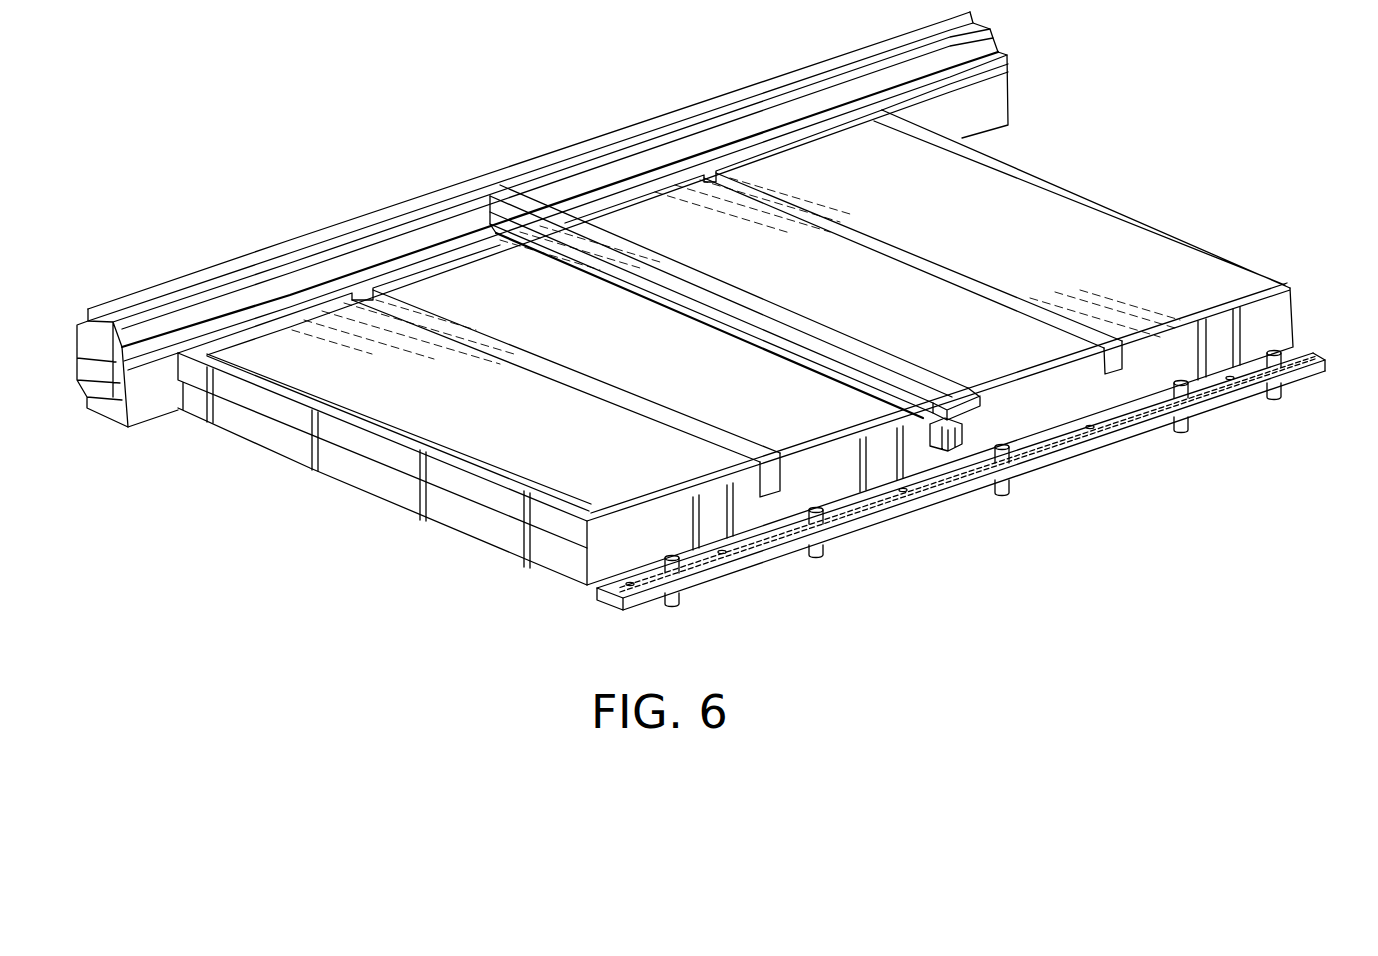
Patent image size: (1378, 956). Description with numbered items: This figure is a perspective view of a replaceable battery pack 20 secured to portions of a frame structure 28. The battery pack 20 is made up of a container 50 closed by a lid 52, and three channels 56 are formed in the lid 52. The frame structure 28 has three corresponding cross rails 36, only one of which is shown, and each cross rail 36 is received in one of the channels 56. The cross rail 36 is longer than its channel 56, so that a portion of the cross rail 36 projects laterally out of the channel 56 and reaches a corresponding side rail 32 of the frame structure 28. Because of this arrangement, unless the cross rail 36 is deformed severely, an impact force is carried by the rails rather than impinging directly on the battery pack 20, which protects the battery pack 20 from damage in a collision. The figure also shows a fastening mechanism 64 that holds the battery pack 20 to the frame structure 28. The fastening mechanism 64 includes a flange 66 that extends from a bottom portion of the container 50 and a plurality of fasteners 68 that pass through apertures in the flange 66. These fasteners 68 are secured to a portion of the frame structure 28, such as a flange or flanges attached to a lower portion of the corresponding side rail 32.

The battery pack 20 is at (470, 522).
The frame structure 28 is at (184, 261).
The side rail 32 is at (298, 292).
The cross rail 36 is at (575, 226).
The container 50 is at (318, 453).
The lid 52 is at (965, 204).
The channel 56 is at (776, 486).
The fastening mechanism 64 is at (1332, 356).
The flange 66 is at (1207, 400).
The fastener 68 is at (1000, 448).